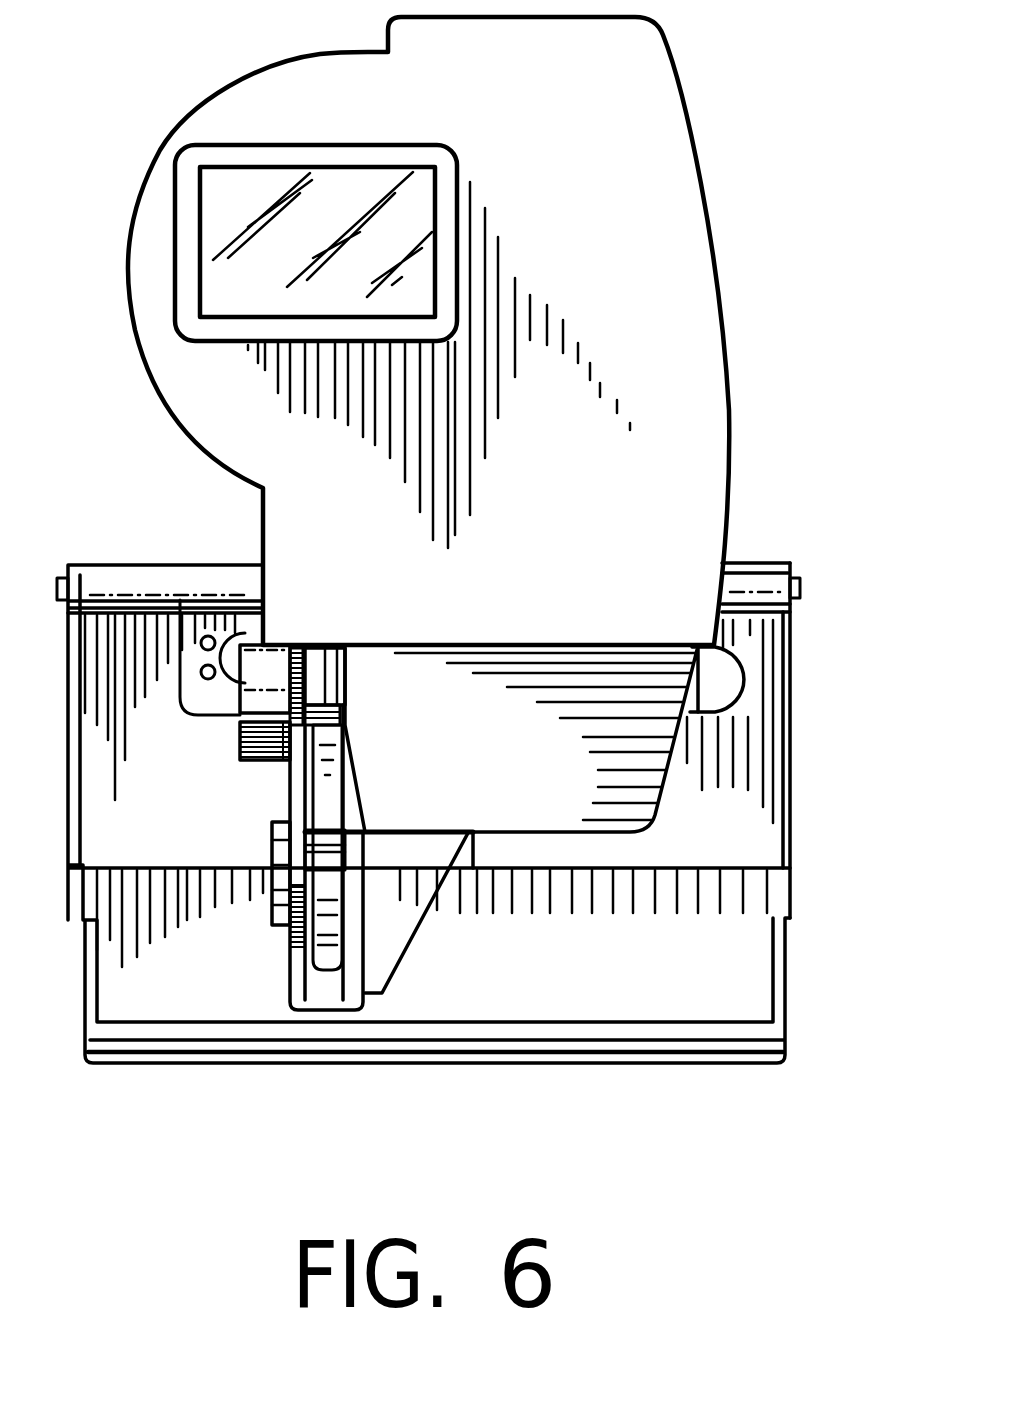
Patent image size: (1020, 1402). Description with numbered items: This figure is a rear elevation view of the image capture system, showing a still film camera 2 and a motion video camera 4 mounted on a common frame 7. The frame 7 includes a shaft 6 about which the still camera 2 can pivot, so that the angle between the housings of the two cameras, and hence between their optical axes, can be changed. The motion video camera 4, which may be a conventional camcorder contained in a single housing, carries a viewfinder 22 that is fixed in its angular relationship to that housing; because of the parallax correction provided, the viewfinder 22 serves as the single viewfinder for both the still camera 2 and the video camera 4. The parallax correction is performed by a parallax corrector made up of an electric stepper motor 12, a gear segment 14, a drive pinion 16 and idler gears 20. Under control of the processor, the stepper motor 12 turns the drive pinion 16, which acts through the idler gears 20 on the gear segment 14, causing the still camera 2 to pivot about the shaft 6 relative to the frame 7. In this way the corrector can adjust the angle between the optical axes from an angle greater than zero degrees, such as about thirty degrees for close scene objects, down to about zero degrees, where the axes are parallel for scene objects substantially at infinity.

The still film camera 2 is at (690, 230).
The motion video camera 4 is at (440, 1065).
The shaft 6 is at (800, 590).
The frame 7 is at (792, 660).
The electric stepper motor 12 is at (240, 733).
The gear segment 14 is at (335, 975).
The drive pinion 16 is at (348, 692).
The idler gears 20 is at (335, 815).
The viewfinder 22 is at (215, 228).